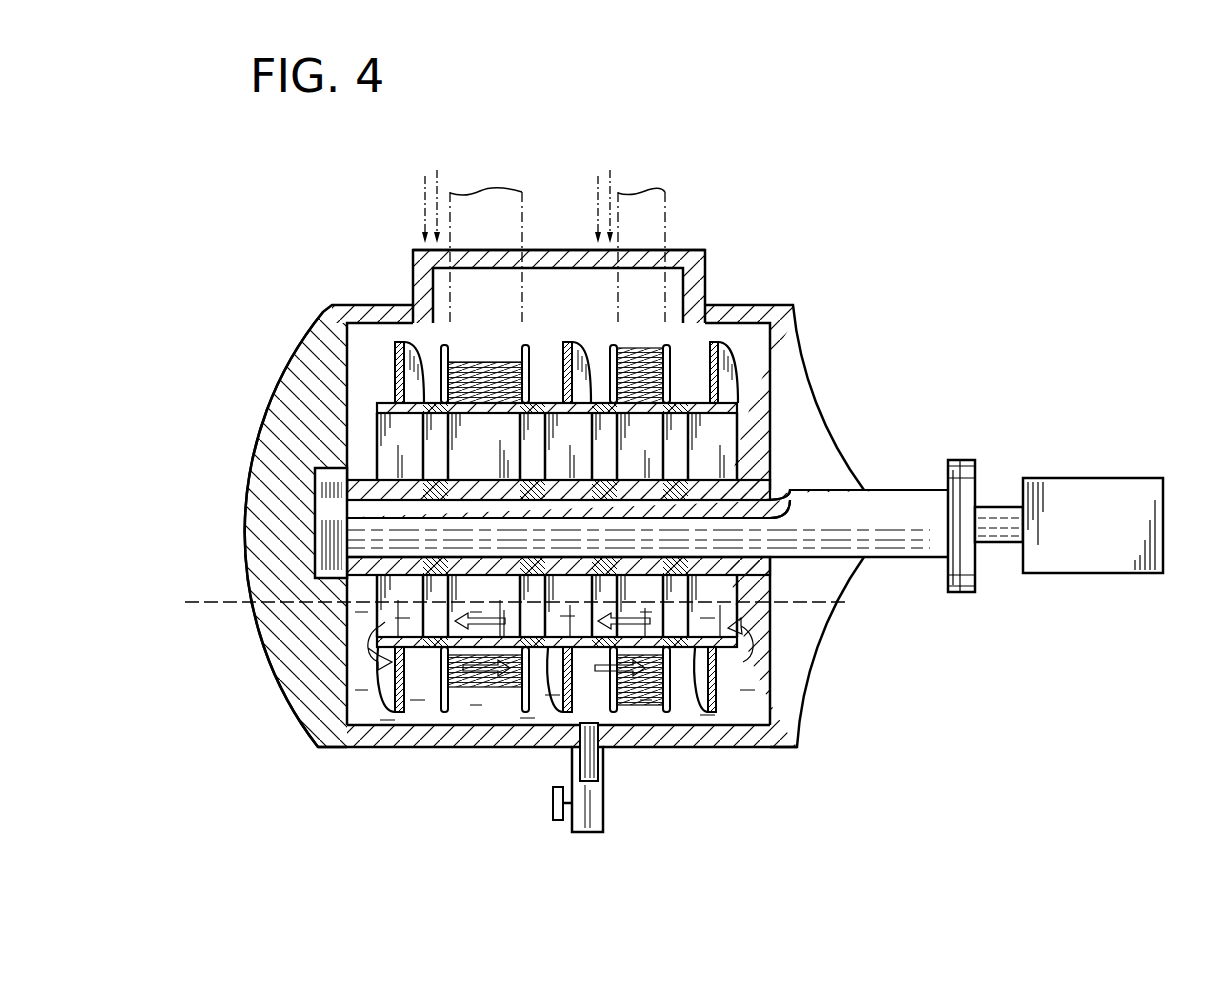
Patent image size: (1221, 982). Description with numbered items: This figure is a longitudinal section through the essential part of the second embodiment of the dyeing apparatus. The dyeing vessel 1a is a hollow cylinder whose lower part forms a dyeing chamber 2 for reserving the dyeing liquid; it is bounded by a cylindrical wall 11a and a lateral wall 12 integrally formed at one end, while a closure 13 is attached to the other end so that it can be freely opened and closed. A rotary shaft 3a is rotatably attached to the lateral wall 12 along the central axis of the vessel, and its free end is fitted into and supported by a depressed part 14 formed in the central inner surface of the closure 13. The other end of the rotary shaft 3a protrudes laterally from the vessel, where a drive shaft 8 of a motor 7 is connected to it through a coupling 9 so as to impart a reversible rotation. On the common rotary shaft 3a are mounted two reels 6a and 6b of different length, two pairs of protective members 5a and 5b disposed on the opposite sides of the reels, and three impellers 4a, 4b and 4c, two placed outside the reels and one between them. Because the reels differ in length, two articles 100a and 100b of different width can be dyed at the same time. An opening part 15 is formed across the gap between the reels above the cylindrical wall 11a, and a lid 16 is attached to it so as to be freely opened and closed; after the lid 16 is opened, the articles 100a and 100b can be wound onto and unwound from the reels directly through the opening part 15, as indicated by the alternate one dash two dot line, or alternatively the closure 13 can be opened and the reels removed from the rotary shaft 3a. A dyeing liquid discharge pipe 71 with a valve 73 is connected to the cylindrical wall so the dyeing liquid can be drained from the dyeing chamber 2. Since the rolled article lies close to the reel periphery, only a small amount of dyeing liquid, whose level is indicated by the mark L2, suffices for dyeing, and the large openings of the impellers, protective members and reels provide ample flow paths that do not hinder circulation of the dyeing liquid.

The dyeing vessel 1a is at (868, 377).
The dyeing chamber 2 is at (742, 713).
The rotary shaft 3a is at (910, 500).
The impeller 4a is at (385, 330).
The impeller 4b is at (724, 343).
The impeller 4c is at (570, 341).
The protective member 5a is at (447, 341).
The protective member 5b is at (670, 343).
The reel 6a is at (508, 398).
The reel 6b is at (647, 397).
The motor 7 is at (1058, 490).
The drive shaft 8 is at (1000, 507).
The coupling 9 is at (975, 575).
The cylindrical wall 11a is at (428, 740).
The lateral wall 12 is at (808, 331).
The closure 13 is at (303, 355).
The depressed part 14 is at (317, 480).
The opening part 15 is at (707, 281).
The lid 16 is at (700, 250).
The dyeing liquid discharge pipe 71 is at (603, 808).
The valve 73 is at (553, 806).
The article 100a is at (482, 195).
The article 100b is at (655, 193).
The liquid level L2 is at (517, 647).